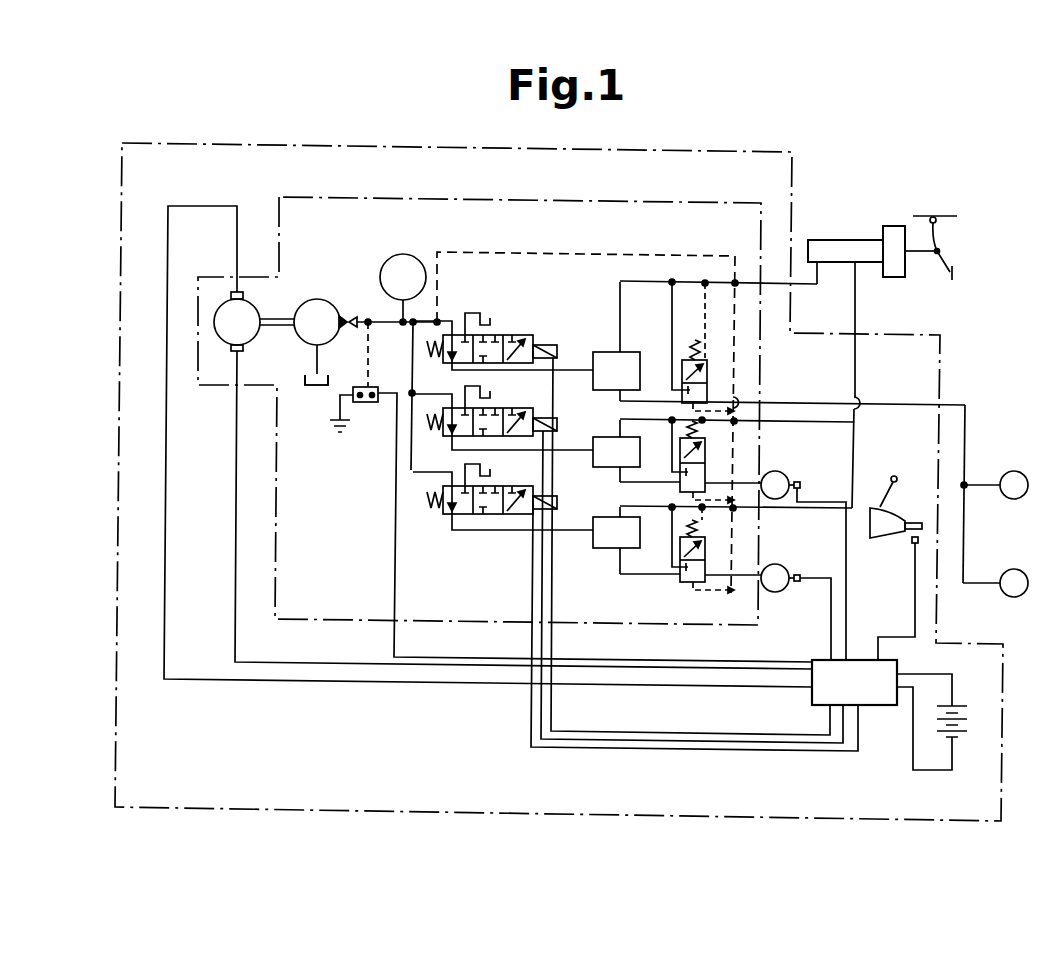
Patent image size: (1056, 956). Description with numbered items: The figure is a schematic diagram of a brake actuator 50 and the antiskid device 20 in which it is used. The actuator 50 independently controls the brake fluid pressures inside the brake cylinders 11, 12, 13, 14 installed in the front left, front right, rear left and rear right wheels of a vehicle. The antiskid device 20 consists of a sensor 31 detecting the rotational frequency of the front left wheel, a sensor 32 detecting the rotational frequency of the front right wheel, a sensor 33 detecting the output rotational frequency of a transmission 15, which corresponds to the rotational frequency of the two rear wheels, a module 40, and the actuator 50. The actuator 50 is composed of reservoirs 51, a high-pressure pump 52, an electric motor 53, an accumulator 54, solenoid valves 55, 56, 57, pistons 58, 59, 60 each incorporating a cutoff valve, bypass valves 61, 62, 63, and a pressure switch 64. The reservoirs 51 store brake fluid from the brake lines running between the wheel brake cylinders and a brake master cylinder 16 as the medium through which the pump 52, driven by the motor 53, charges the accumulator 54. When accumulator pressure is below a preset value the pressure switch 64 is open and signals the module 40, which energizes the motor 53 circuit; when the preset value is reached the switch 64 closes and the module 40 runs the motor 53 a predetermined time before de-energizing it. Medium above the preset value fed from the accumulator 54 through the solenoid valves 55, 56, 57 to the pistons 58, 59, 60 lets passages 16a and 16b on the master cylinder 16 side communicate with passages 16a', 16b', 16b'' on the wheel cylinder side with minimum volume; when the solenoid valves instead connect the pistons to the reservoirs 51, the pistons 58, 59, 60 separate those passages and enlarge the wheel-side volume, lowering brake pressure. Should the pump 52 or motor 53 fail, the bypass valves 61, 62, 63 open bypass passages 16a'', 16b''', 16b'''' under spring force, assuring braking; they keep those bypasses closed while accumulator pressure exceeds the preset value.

The brake cylinder 11 is at (773, 593).
The brake cylinder 12 is at (784, 476).
The brake cylinder 13 is at (1013, 569).
The brake cylinder 14 is at (1013, 471).
The transmission 15 is at (870, 540).
The brake master cylinder 16 is at (836, 240).
The hydraulic fluid passage 16a is at (713, 254).
The hydraulic fluid passage 16a' is at (792, 382).
The bypass passage 16a'' is at (711, 306).
The hydraulic fluid passage 16b is at (778, 464).
The hydraulic fluid passage 16b' is at (736, 511).
The hydraulic fluid passage 16b'' is at (742, 555).
The bypass passage 16b''' is at (623, 439).
The bypass passage 16b'''' is at (658, 561).
The antiskid device 20 is at (792, 152).
The sensor 31 is at (797, 585).
The sensor 32 is at (801, 485).
The sensor 33 is at (914, 545).
The module 40 is at (812, 690).
The actuator 50 is at (700, 202).
The reservoir 51 is at (312, 388).
The high-pressure pump 52 is at (318, 300).
The electric motor 53 is at (232, 300).
The accumulator 54 is at (390, 265).
The solenoid valve 55 is at (520, 345).
The solenoid valve 56 is at (525, 418).
The solenoid valve 57 is at (525, 495).
The piston 58 is at (628, 352).
The piston 59 is at (602, 468).
The piston 60 is at (587, 550).
The bypass valve 61 is at (707, 372).
The bypass valve 62 is at (707, 446).
The bypass valve 63 is at (708, 578).
The pressure switch 64 is at (372, 405).